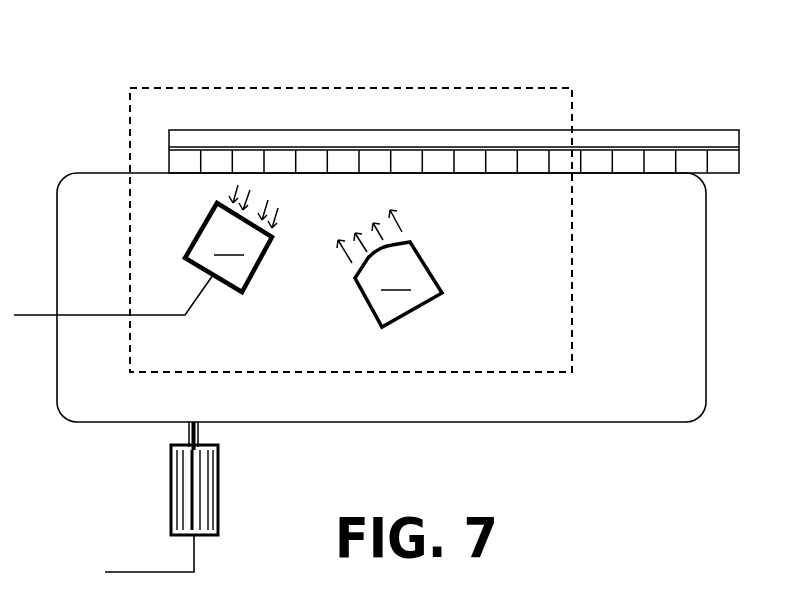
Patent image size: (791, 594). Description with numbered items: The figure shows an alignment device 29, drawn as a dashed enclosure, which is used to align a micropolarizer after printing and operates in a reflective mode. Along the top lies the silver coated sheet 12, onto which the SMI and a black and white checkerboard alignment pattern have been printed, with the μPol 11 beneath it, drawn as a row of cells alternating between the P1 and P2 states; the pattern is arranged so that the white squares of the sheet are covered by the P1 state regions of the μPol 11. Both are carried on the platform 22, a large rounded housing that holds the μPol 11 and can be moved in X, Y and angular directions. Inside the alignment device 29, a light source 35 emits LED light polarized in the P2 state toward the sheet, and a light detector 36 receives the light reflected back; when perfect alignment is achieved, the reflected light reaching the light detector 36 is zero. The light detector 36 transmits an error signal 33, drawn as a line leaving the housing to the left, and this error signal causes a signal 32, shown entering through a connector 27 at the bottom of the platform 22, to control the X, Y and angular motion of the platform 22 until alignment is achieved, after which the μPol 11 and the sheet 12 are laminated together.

The μPol 11 is at (727, 174).
The silver coated sheet 12 is at (625, 130).
The platform 22 is at (632, 391).
The connector 27 is at (220, 487).
The alignment device 29 is at (333, 88).
The signal 32 is at (150, 572).
The error signal 33 is at (40, 314).
The emitter 35 is at (389, 268).
The light detector 36 is at (231, 238).